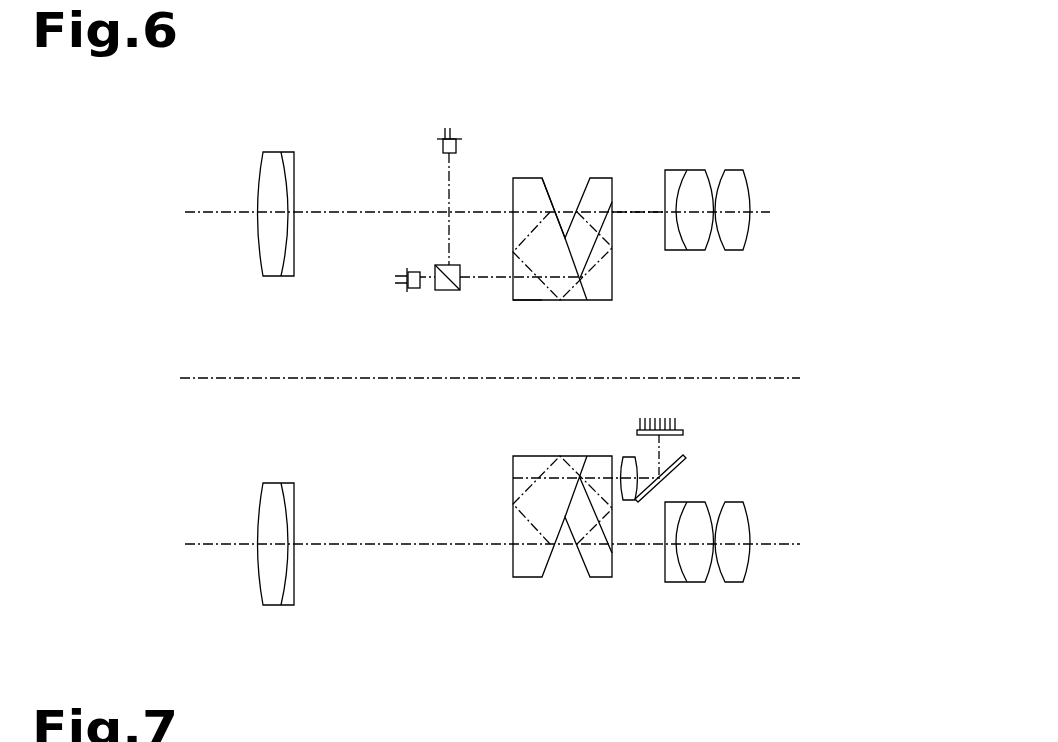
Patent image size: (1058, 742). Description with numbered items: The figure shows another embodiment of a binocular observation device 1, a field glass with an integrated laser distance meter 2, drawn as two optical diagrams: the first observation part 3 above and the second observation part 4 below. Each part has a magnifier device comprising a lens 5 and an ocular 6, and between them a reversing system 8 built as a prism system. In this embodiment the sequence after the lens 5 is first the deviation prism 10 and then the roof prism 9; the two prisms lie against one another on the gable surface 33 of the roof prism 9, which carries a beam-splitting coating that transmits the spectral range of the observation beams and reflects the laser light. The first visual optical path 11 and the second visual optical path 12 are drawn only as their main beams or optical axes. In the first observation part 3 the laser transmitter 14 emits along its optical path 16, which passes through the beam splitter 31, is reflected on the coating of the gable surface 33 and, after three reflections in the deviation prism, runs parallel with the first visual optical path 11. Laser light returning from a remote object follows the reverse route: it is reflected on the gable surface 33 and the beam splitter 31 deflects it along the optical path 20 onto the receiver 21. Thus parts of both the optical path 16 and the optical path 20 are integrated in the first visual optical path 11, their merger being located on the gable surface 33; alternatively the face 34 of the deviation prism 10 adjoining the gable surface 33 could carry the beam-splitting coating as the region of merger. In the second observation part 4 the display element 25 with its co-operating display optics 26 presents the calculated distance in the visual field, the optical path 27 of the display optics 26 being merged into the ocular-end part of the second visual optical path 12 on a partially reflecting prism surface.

The observation device 1 is at (778, 598).
The laser distance meter 2 is at (455, 118).
The first observation part 3 is at (815, 223).
The second observation part 4 is at (810, 537).
The lens 5 is at (280, 148).
The ocular 6 is at (718, 152).
The reversing system 8 is at (584, 124).
The roof prism 9 is at (613, 308).
The deviation prism 10 is at (540, 310).
The first visual optical path 11 is at (625, 208).
The second visual optical path 12 is at (640, 548).
The laser transmitter 14 is at (390, 283).
The optical path of the laser transmitter 16 is at (490, 282).
The optical path of the laser receiver 20 is at (445, 228).
The receiver 21 is at (462, 134).
The display element 25 is at (697, 425).
The display optics 26 is at (618, 452).
The optical path of the display optics 27 is at (662, 451).
The beam splitter 31 is at (428, 297).
The gable surface 33 is at (590, 291).
The face of the deviation prism 34 is at (557, 204).